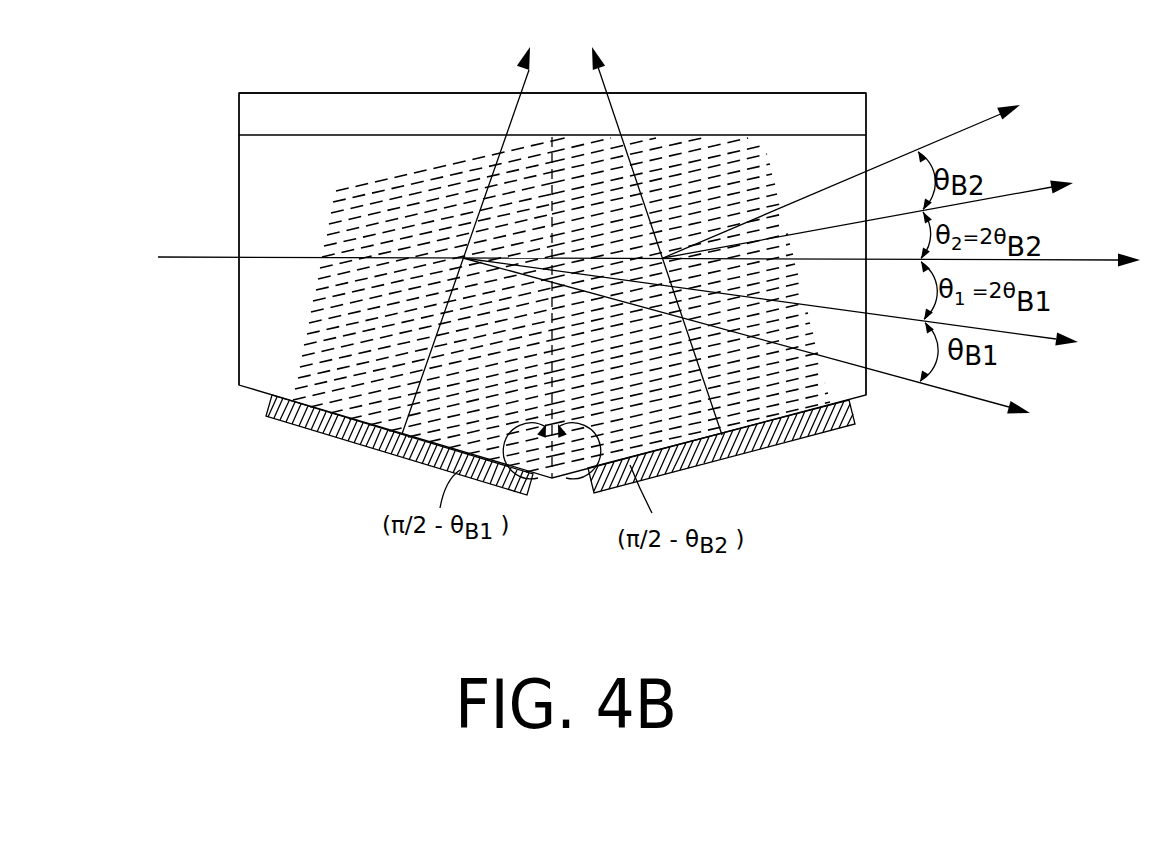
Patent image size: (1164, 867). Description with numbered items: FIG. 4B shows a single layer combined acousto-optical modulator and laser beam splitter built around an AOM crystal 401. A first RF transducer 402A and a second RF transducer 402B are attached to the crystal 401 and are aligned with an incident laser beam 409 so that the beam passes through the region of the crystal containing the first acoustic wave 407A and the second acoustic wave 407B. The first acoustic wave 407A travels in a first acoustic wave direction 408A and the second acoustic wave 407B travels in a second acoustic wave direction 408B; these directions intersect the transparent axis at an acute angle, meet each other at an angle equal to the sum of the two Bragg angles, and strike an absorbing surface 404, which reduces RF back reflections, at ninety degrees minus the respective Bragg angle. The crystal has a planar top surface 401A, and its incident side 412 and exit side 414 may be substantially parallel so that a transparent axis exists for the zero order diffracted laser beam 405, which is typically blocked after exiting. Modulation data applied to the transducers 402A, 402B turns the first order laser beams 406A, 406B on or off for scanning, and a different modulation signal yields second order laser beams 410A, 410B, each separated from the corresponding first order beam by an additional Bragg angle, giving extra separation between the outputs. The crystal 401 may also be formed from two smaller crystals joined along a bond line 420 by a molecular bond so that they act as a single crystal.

The AOM crystal 401 is at (257, 193).
The top surface 401A is at (233, 317).
The first RF transducer 402A is at (355, 445).
The second RF transducer 402B is at (693, 473).
The absorbing surface 404 is at (550, 92).
The zero order diffracted laser beam 405 is at (1085, 260).
The first order laser beam 406A is at (1028, 340).
The first order laser beam 406B is at (1023, 183).
The first acoustic wave 407A is at (357, 188).
The second acoustic wave 407B is at (750, 92).
The first acoustic wave direction 408A is at (513, 80).
The second acoustic wave direction 408B is at (608, 80).
The incident laser beam 409 is at (205, 260).
The second order laser beam 410A is at (985, 405).
The second order laser beam 410B is at (975, 117).
The incident side 412 is at (238, 153).
The exit side 414 is at (870, 157).
The bond line 420 is at (567, 467).